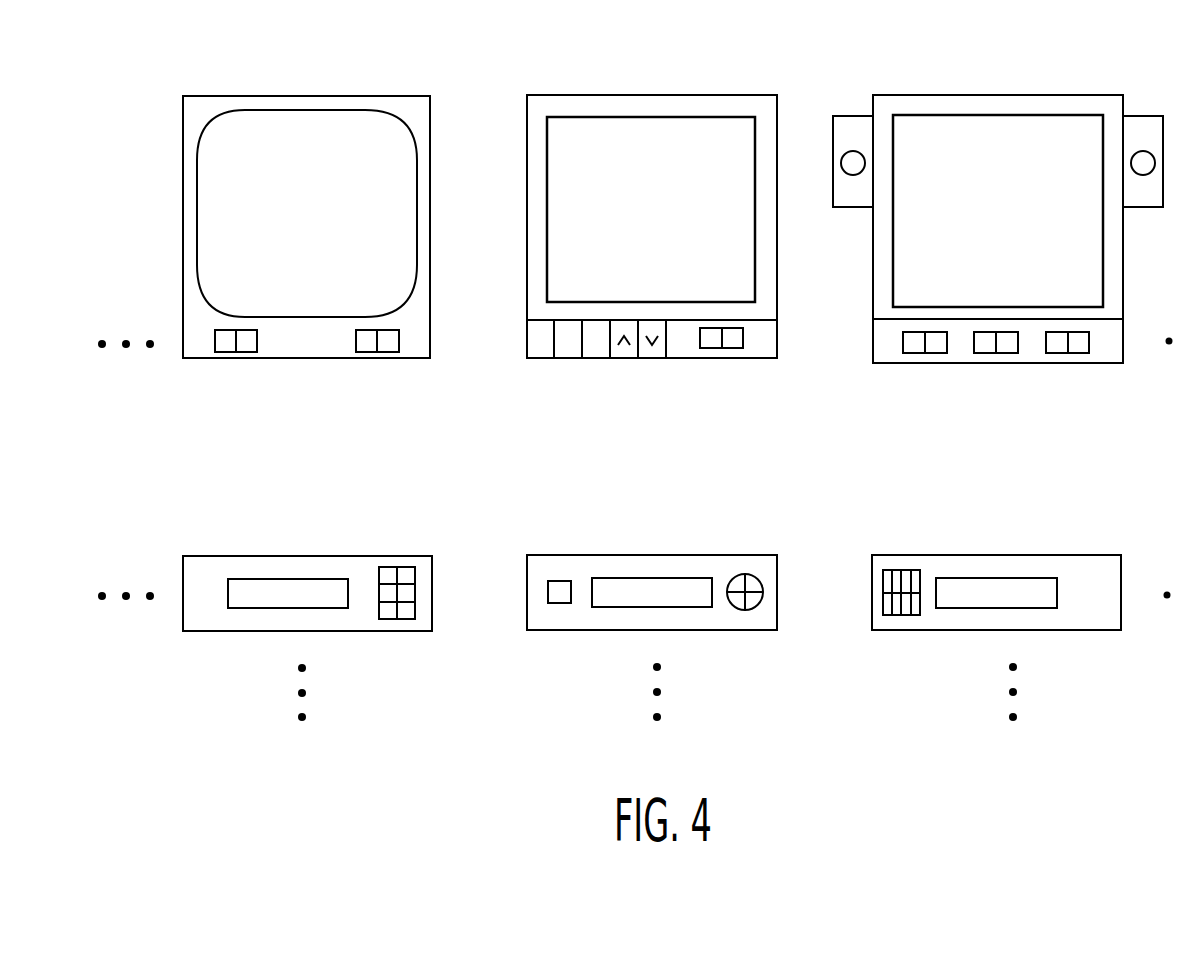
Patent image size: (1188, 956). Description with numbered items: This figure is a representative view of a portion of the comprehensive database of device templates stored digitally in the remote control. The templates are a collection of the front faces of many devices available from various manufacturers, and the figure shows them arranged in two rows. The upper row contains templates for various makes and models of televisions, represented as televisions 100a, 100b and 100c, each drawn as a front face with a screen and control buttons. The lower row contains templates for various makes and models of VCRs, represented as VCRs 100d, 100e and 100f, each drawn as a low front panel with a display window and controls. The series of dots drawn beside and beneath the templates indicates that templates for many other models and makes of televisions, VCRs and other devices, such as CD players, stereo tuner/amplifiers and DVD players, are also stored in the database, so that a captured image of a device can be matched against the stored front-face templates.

The television template 100a is at (313, 96).
The television template 100b is at (652, 95).
The television template 100c is at (992, 95).
The VCR template 100d is at (305, 556).
The VCR template 100e is at (643, 555).
The VCR template 100f is at (983, 555).